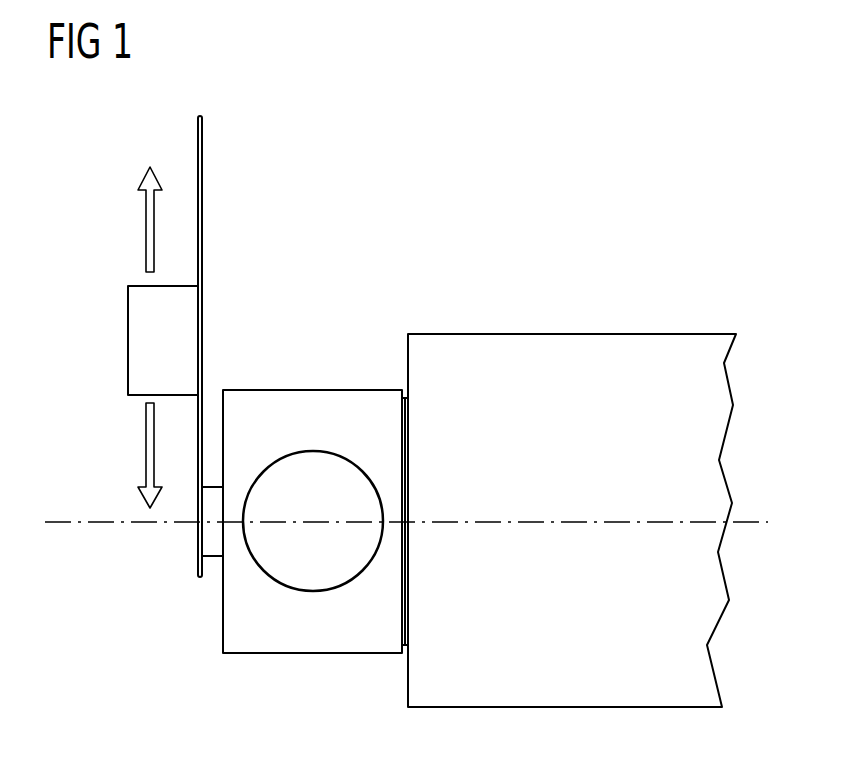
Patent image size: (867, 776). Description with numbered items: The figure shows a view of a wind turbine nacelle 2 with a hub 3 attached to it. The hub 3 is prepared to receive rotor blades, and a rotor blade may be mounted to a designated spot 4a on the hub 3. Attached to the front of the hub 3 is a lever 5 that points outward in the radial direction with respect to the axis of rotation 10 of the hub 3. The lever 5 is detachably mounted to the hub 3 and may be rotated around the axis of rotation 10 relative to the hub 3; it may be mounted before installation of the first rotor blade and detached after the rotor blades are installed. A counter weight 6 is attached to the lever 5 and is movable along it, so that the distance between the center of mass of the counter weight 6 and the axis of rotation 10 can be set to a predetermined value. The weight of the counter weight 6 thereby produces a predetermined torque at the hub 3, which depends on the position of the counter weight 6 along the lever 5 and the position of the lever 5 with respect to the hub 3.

The nacelle 2 is at (481, 346).
The hub 3 is at (269, 396).
The designated spot 4a is at (322, 462).
The lever 5 is at (204, 193).
The counter weight 6 is at (137, 337).
The axis of rotation 10 is at (62, 524).